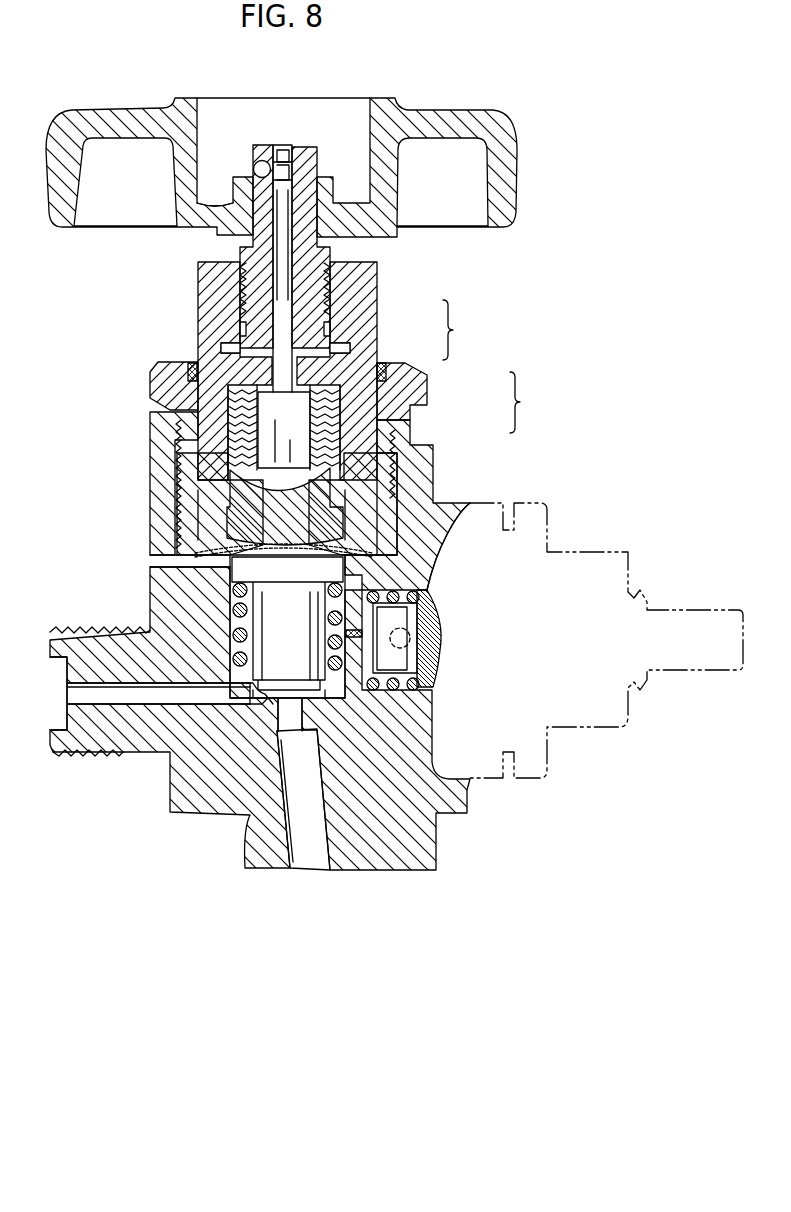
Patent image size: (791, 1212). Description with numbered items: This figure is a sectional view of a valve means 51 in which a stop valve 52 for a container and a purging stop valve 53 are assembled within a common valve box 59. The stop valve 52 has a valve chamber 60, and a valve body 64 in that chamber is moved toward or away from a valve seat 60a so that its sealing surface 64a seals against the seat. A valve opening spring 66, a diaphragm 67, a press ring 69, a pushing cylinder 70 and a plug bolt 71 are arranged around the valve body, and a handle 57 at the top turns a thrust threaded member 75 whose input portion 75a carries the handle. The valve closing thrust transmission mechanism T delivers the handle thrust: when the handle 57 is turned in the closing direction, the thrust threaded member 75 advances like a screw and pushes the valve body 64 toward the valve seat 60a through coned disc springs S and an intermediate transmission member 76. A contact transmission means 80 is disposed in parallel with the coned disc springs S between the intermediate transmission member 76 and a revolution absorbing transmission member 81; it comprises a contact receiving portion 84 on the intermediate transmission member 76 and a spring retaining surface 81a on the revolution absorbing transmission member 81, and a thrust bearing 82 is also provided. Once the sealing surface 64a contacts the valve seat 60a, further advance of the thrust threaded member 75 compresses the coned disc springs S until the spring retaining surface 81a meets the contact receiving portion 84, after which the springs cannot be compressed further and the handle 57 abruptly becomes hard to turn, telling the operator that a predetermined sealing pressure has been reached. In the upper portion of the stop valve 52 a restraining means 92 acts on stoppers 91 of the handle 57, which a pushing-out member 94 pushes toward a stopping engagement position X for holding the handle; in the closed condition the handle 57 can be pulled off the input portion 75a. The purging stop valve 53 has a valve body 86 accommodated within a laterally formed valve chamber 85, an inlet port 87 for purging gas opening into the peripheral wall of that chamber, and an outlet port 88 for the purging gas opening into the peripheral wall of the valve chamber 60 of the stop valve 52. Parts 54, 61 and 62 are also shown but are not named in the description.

The valve means 51 is at (544, 574).
The stop valve for the container 52 is at (446, 408).
The purging stop valve 53 is at (507, 478).
The inlet body portion 54 is at (84, 634).
The handle 57 is at (152, 110).
The common valve box 59 is at (423, 494).
The valve chamber 60 is at (230, 592).
The valve seat 60a is at (270, 704).
The lower stem 61 is at (284, 830).
The inlet passage 62 is at (96, 706).
The valve body 64 is at (252, 622).
The sealing surface 64a is at (305, 706).
The valve opening spring 66 is at (233, 608).
The diaphragm 67 is at (151, 549).
The press ring 69 is at (150, 504).
The pushing cylinder 70 is at (190, 493).
The plug bolt 71 is at (160, 376).
The thrust threaded member 75 is at (238, 251).
The input portion 75a is at (240, 199).
The intermediate transmission member 76 is at (257, 455).
The contact transmission means 80 is at (463, 330).
The revolution absorbing transmission member 81 is at (224, 362).
The spring retaining surface 81a is at (333, 352).
The thrust bearing 82 is at (237, 338).
The contact receiving portion 84 is at (342, 382).
The valve chamber 85 is at (393, 692).
The valve body 86 is at (422, 633).
The inlet port 87 is at (412, 625).
The outlet port 88 is at (358, 650).
The stoppers 91 is at (251, 168).
The restraining means 92 is at (277, 144).
The pushing-out member 94 is at (285, 149).
The coned disc springs S is at (174, 433).
The valve closing thrust transmission mechanism T is at (225, 473).
The stopping engagement position X is at (213, 177).